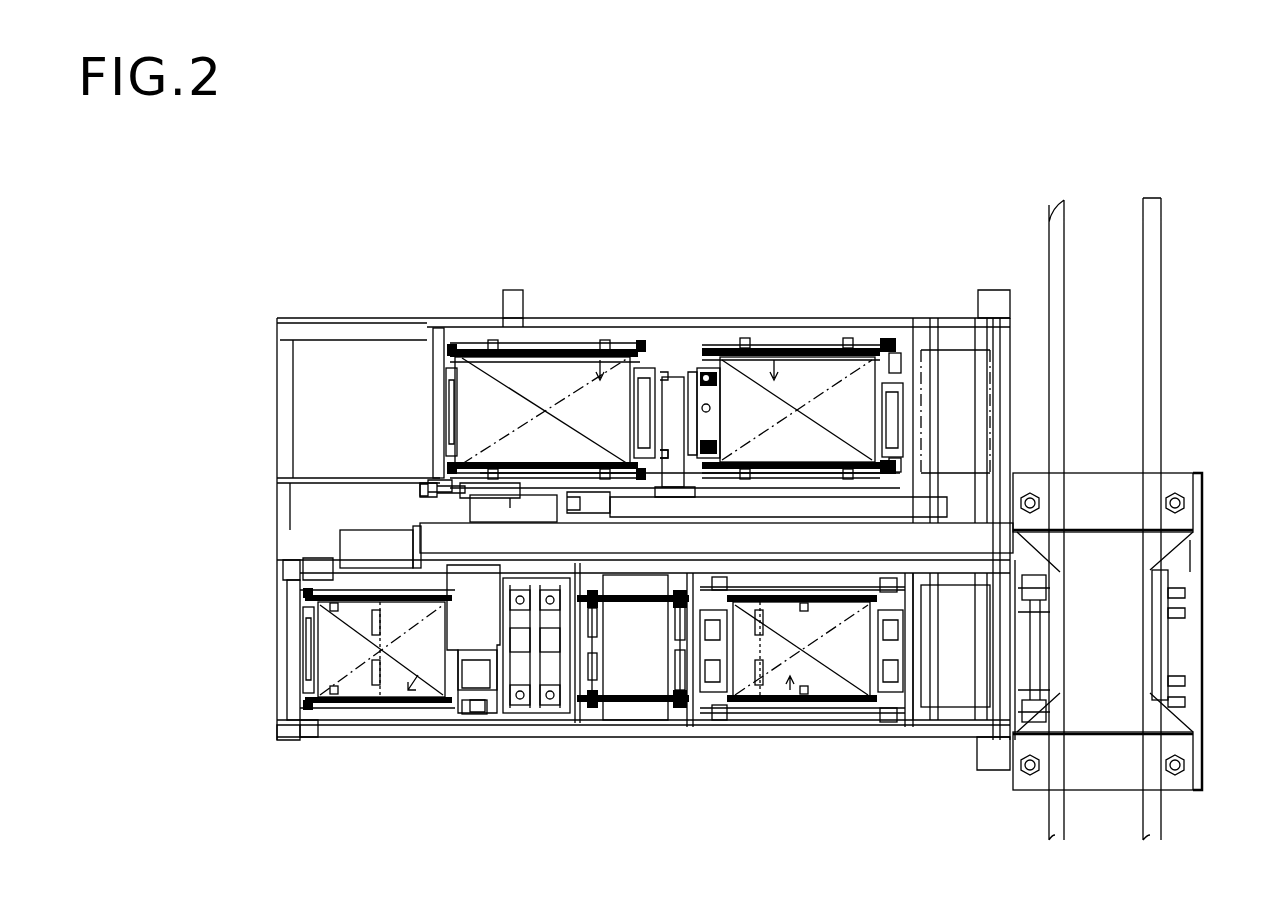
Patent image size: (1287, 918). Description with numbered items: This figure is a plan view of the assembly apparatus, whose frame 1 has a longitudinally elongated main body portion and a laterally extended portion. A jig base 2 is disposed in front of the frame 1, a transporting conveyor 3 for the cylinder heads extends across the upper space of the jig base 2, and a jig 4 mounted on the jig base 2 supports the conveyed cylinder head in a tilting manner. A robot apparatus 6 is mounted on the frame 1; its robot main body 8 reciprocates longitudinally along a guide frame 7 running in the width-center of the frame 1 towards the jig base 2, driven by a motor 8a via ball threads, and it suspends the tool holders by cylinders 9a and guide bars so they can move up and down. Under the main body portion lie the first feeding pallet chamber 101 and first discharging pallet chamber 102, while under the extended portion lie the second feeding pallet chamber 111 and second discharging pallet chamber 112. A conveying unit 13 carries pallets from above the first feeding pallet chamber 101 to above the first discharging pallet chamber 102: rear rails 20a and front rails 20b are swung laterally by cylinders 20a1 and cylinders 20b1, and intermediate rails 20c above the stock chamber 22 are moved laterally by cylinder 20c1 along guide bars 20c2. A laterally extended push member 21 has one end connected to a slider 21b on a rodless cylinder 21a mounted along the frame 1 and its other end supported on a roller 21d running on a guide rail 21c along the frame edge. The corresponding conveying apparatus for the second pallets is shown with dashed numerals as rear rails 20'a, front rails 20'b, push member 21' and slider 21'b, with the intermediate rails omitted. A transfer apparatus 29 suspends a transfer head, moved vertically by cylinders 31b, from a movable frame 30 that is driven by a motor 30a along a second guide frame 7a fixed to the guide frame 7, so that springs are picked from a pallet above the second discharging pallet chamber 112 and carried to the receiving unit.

The frame 1 is at (737, 737).
The jig base 2 is at (1195, 660).
The transporting conveyor 3 is at (1161, 372).
The jig 4 is at (1160, 635).
The robot apparatus 6 is at (565, 720).
The guide frame 7 is at (955, 525).
The second guide frame 7a is at (833, 505).
The robot main body 8 is at (457, 580).
The motor 8a is at (470, 510).
The cylinders 9a is at (548, 648).
The first feeding pallet chamber 101 is at (430, 700).
The first discharging pallet chamber 102 is at (790, 700).
The second feeding pallet chamber 111 is at (600, 365).
The second discharging pallet chamber 112 is at (774, 365).
The conveying unit 13 is at (296, 551).
The rear rails 20a is at (368, 700).
The cylinders 20a1 is at (445, 690).
The front rails 20b is at (850, 680).
The cylinders 20b1 is at (770, 705).
The intermediate rails 20c is at (622, 560).
The cylinder 20c1 is at (615, 600).
The guide bars 20c2 is at (668, 620).
The rear rails 20'a is at (545, 362).
The front rails 20'b is at (791, 362).
The push member 21 is at (261, 650).
The push member 21' is at (417, 412).
The rodless cylinder 21a is at (285, 560).
The slider 21b is at (330, 560).
The slider 21'b is at (490, 448).
The guide rail 21c is at (303, 740).
The roller 21d is at (290, 737).
The stock chamber 22 is at (655, 620).
The transfer apparatus 29 is at (748, 345).
The movable frame 30 is at (668, 392).
The motor 30a is at (592, 492).
The cylinders 31b is at (712, 408).